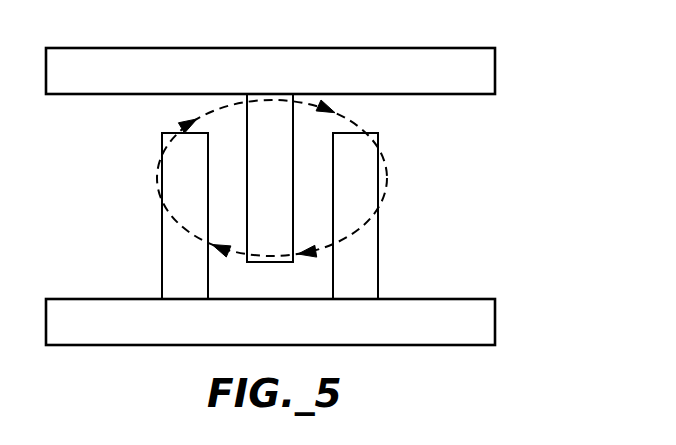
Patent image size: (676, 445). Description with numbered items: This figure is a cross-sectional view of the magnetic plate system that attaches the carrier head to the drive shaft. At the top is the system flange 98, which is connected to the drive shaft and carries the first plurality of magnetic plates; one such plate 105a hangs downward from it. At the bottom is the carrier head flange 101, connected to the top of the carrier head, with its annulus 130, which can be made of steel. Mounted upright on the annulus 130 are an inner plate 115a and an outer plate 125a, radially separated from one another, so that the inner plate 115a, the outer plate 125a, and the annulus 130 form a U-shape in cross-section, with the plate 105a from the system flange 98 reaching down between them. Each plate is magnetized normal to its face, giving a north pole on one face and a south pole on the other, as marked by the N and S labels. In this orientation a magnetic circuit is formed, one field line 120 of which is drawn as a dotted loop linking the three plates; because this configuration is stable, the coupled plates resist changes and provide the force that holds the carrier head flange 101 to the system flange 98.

The system flange 98 is at (496, 63).
The carrier head flange 101 is at (496, 318).
The annulus 130 is at (253, 331).
The magnetic plate 105a is at (264, 214).
The outer plate 125a is at (176, 282).
The inner plate 115a is at (370, 271).
The field line 120 is at (351, 119).